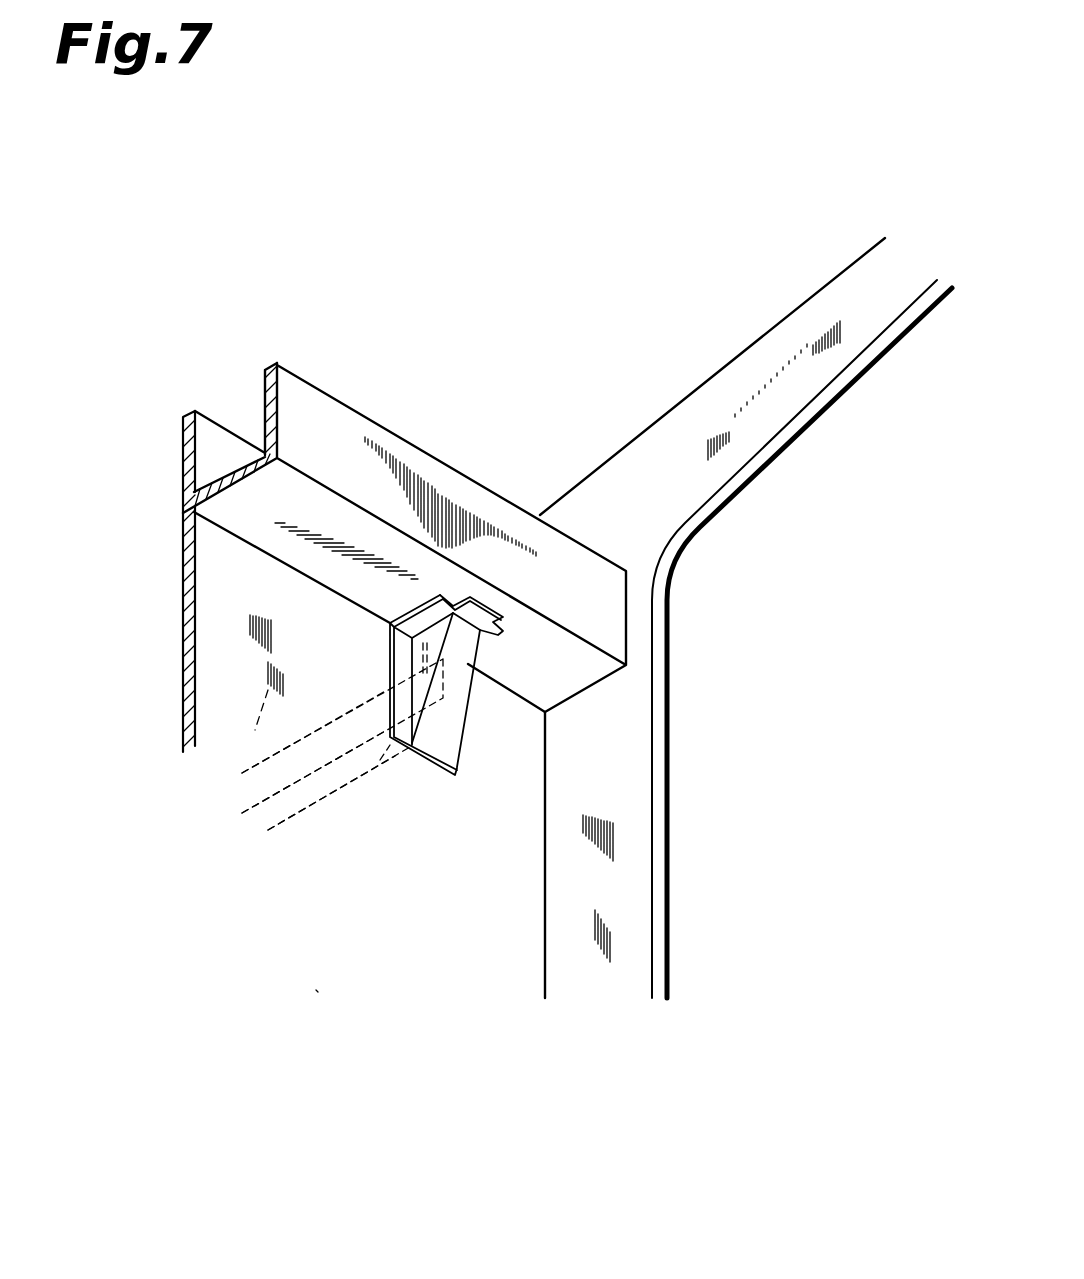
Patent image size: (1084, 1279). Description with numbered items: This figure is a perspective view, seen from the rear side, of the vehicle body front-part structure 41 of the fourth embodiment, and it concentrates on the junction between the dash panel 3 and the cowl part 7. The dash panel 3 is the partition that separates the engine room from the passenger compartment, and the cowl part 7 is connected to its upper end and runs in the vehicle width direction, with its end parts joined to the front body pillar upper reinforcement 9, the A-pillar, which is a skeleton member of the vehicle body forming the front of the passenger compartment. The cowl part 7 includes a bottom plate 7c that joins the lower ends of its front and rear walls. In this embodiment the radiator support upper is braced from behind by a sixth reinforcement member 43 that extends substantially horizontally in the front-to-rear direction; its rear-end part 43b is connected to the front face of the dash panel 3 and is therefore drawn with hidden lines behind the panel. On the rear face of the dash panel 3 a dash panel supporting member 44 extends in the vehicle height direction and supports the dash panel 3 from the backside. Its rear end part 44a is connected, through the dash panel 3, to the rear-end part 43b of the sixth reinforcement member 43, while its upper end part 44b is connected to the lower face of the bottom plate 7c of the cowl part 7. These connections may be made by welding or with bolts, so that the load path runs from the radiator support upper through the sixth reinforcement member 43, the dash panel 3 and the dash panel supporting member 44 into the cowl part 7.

The dash panel 3 is at (227, 682).
The cowl part 7 is at (437, 434).
The bottom plate 7c is at (310, 537).
The front body pillar upper reinforcement 9 is at (670, 497).
The vehicle body front-part structure 41 is at (315, 988).
The sixth reinforcement member 43 is at (317, 803).
The rear-end part 43b is at (380, 760).
The dash panel supporting member 44 is at (428, 735).
The rear end part 44a is at (447, 777).
The upper end part 44b is at (462, 643).